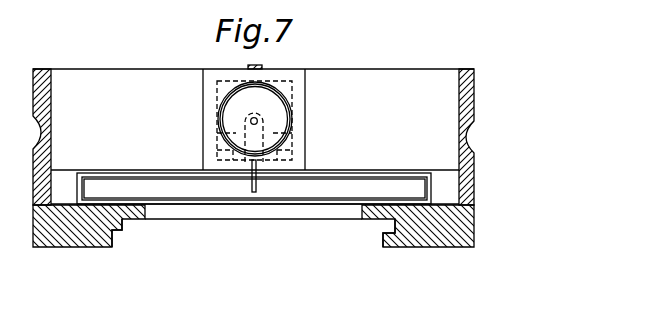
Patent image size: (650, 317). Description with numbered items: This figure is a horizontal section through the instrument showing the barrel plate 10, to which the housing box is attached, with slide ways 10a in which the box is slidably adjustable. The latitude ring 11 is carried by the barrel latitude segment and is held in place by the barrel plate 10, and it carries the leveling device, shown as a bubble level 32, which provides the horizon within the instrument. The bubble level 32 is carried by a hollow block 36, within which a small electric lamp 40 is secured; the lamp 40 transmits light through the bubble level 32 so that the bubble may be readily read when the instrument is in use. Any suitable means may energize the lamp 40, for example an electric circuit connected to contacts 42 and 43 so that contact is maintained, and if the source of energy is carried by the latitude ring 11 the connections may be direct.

The barrel plate 10 is at (474, 207).
The slide ways 10a is at (121, 228).
The latitude ring 11 is at (474, 107).
The bubble level 32 is at (280, 118).
The hollow block 36 is at (203, 108).
The electric lamp 40 is at (217, 135).
The contact 42 is at (252, 183).
The contact 43 is at (307, 194).